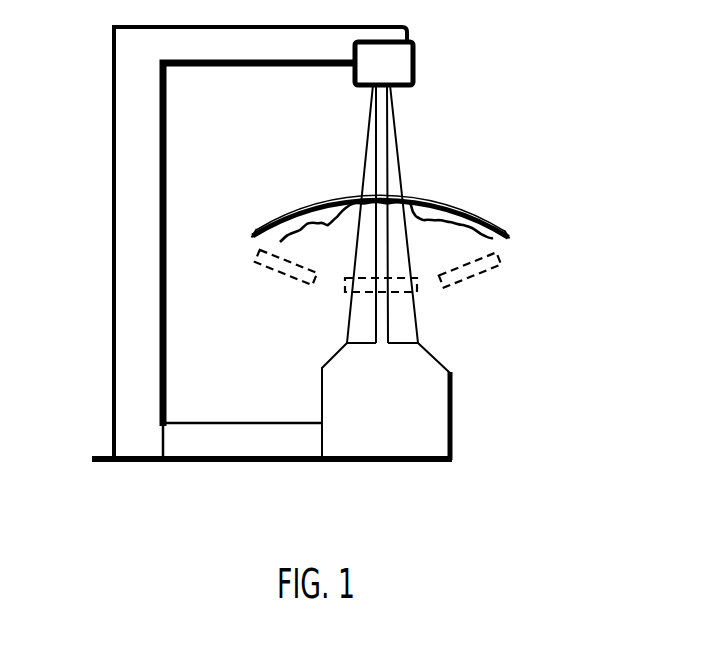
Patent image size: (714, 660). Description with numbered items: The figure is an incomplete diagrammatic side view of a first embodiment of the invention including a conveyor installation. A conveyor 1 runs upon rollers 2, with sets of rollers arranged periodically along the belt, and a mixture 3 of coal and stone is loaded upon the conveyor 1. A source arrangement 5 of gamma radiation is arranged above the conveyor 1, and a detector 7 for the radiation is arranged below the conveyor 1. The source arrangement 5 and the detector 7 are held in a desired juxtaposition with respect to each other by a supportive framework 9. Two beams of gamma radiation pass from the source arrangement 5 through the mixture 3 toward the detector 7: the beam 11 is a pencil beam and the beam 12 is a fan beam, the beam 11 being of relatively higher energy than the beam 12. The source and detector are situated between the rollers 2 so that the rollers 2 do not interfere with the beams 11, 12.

The conveyor 1 is at (257, 243).
The rollers 2 is at (290, 276).
The mixture 3 is at (442, 233).
The source arrangement 5 is at (397, 58).
The detector 7 is at (433, 418).
The supportive framework 9 is at (132, 325).
The beam 11 is at (380, 160).
The beam 12 is at (370, 191).